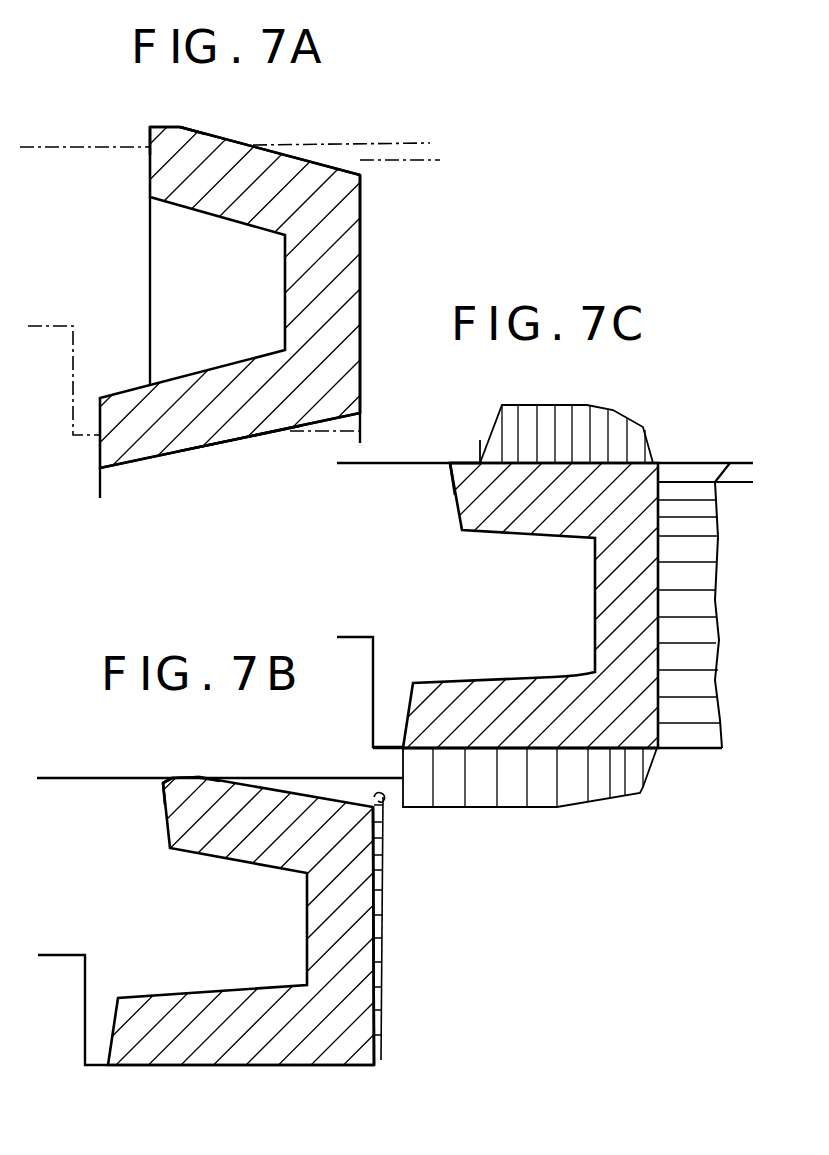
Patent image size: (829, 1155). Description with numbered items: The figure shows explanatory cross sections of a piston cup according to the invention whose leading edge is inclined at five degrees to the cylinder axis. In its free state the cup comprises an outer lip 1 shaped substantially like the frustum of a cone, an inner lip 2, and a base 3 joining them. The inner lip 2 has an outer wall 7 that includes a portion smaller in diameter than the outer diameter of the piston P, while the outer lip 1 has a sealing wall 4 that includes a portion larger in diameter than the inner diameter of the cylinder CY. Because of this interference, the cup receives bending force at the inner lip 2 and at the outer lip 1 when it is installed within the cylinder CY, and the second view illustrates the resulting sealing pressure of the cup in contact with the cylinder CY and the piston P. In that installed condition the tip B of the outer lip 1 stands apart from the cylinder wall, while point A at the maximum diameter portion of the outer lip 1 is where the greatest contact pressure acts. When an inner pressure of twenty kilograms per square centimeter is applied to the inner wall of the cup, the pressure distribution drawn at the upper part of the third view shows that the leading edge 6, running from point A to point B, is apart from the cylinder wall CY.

In FIG. 7A, the outer lip 1 is at (212, 148).
In FIG. 7B, the outer lip 1 is at (261, 800).
In FIG. 7C, the outer lip 1 is at (543, 470).
In FIG. 7A, the inner lip 2 is at (177, 425).
In FIG. 7B, the inner lip 2 is at (183, 1055).
In FIG. 7C, the inner lip 2 is at (517, 730).
In FIG. 7A, the base 3 is at (362, 272).
In FIG. 7B, the base 3 is at (376, 880).
In FIG. 7A, the sealing wall 4 is at (231, 143).
In FIG. 7A, the leading edge 6 is at (172, 127).
In FIG. 7B, the leading edge 6 is at (173, 778).
In FIG. 7C, the leading edge 6 is at (460, 463).
In FIG. 7A, the outer wall 7 is at (232, 440).
In FIG. 7A, the tip A is at (187, 128).
In FIG. 7B, the tip A is at (200, 777).
In FIG. 7C, the tip A is at (478, 463).
In FIG. 7A, the tip B is at (151, 127).
In FIG. 7B, the tip B is at (163, 782).
In FIG. 7C, the tip B is at (448, 463).
In FIG. 7A, the cylinder CY is at (313, 145).
In FIG. 7B, the cylinder CY is at (310, 778).
In FIG. 7C, the cylinder CY is at (408, 462).
In FIG. 7A, the piston P is at (73, 328).
In FIG. 7B, the piston P is at (85, 995).
In FIG. 7C, the piston P is at (373, 708).